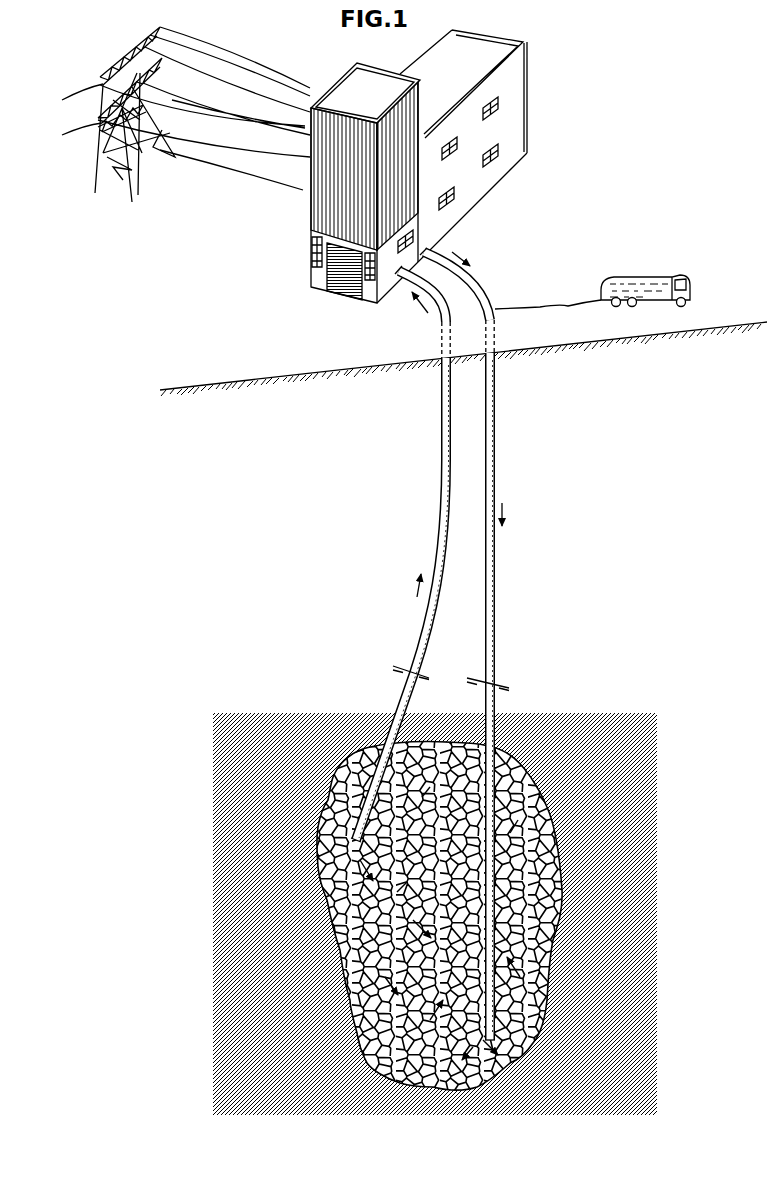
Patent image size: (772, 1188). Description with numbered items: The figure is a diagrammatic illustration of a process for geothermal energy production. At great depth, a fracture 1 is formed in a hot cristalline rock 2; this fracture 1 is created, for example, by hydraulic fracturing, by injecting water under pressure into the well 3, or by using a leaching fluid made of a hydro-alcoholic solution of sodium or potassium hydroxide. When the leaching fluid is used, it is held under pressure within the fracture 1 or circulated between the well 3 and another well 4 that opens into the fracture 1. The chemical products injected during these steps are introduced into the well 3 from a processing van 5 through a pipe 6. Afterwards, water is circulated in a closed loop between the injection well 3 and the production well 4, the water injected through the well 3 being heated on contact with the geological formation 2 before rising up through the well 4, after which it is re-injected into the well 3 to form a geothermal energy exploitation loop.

The fracture 1 is at (509, 755).
The hot cristalline rock 2 is at (586, 712).
The well 3 is at (479, 286).
The well 4 is at (440, 309).
The processing van 5 is at (612, 278).
The pipe 6 is at (568, 306).